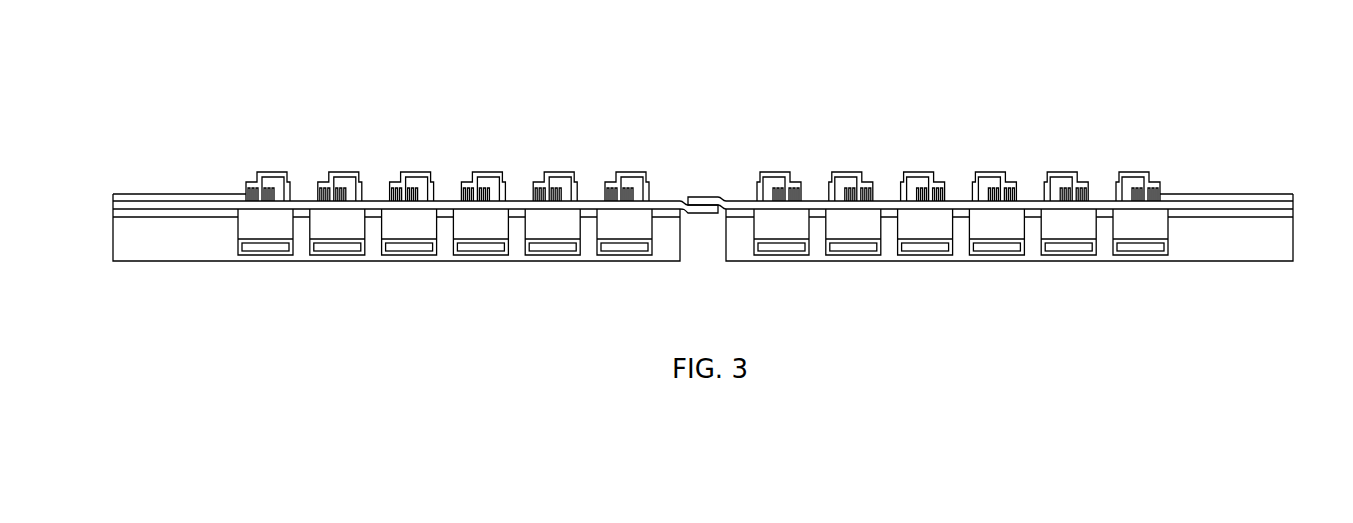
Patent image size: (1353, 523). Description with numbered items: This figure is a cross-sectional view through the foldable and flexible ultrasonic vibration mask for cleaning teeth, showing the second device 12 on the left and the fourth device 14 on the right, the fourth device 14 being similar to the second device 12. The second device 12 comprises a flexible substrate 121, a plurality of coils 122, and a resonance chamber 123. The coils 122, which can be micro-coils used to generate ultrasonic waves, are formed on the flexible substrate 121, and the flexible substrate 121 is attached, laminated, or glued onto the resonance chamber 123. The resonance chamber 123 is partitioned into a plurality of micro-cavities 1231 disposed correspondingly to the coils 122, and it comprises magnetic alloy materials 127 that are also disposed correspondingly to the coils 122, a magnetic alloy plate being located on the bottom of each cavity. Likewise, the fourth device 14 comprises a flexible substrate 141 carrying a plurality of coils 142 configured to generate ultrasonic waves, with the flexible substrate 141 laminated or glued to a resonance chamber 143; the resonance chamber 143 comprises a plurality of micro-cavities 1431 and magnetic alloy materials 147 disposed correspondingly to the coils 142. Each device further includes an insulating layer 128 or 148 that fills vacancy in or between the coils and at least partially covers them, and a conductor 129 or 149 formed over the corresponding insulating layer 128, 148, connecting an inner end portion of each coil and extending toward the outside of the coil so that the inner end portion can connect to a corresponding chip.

The second device 12 is at (387, 173).
The fourth device 14 is at (1019, 173).
The flexible substrate 121 is at (127, 207).
The flexible substrate 141 is at (1283, 207).
The coils 122 is at (277, 184).
The coils 142 is at (1128, 185).
The resonance chamber 123 is at (172, 247).
The resonance chamber 143 is at (1232, 247).
The micro-cavities 1231 is at (338, 223).
The micro-cavities 1431 is at (1070, 223).
The magnetic alloy materials 127 is at (253, 230).
The magnetic alloy materials 147 is at (1153, 230).
The insulating layer 128 is at (325, 183).
The insulating layer 148 is at (1085, 189).
The conductor 129 is at (416, 181).
The conductor 149 is at (991, 183).